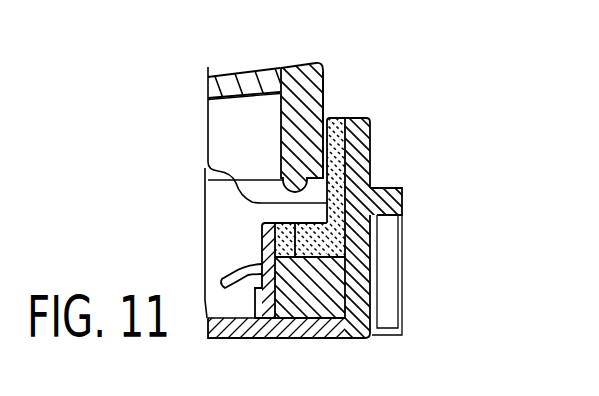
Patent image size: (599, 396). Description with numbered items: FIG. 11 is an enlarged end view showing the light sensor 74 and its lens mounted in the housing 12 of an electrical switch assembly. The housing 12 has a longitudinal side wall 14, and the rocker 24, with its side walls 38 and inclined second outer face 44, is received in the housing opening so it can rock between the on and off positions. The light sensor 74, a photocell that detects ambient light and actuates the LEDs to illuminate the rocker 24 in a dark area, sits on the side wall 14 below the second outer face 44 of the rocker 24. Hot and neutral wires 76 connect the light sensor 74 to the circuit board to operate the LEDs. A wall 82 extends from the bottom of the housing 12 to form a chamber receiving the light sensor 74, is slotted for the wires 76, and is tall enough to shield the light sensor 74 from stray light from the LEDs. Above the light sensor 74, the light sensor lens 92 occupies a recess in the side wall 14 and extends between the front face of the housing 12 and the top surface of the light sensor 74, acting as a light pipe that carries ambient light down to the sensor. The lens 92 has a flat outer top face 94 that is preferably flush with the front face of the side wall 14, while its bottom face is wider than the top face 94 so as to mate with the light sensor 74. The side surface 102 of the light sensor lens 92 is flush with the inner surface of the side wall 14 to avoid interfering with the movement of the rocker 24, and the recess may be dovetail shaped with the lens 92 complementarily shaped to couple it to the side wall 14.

The housing 12 is at (380, 128).
The side wall 14 is at (372, 170).
The rocker 24 is at (328, 60).
The side walls 38 is at (323, 88).
The second outer face 44 is at (257, 68).
The light sensor 74 is at (312, 284).
The wires 76 is at (238, 267).
The wall 82 is at (262, 232).
The light sensor lens 92 is at (354, 203).
The outer top face 94 is at (337, 118).
The side surface 102 is at (205, 168).